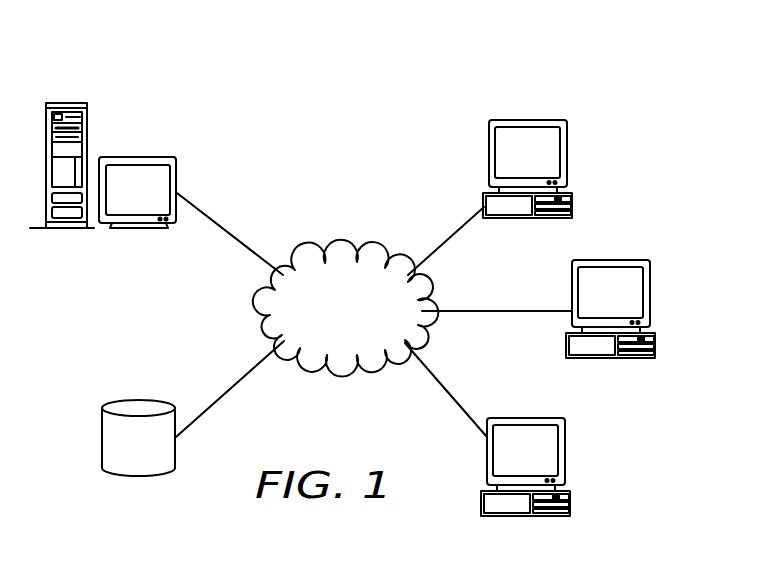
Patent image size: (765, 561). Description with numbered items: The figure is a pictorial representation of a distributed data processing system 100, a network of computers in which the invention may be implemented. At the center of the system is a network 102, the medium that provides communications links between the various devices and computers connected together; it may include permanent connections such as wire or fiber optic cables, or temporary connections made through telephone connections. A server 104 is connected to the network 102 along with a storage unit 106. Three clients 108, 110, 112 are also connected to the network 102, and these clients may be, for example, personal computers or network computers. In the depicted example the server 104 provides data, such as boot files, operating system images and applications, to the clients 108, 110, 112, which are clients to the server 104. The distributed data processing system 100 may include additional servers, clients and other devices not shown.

The distributed data processing system 100 is at (606, 135).
The network 102 is at (325, 320).
The server 104 is at (118, 202).
The storage unit 106 is at (118, 455).
The client 108 is at (507, 164).
The client 110 is at (592, 304).
The client 112 is at (507, 462).